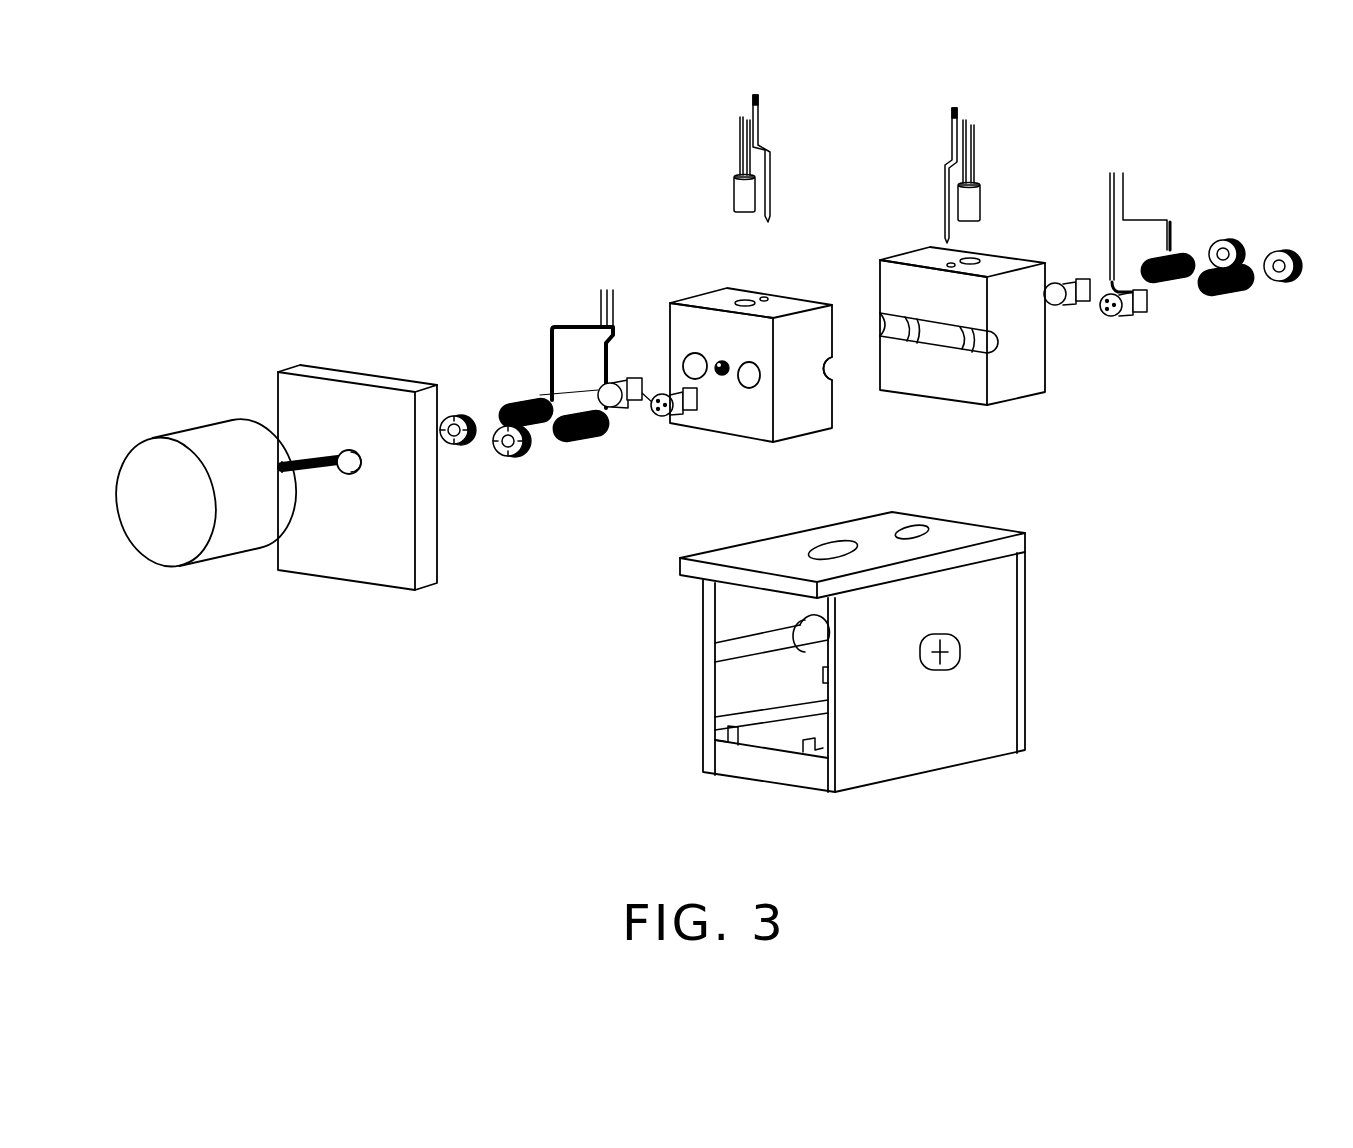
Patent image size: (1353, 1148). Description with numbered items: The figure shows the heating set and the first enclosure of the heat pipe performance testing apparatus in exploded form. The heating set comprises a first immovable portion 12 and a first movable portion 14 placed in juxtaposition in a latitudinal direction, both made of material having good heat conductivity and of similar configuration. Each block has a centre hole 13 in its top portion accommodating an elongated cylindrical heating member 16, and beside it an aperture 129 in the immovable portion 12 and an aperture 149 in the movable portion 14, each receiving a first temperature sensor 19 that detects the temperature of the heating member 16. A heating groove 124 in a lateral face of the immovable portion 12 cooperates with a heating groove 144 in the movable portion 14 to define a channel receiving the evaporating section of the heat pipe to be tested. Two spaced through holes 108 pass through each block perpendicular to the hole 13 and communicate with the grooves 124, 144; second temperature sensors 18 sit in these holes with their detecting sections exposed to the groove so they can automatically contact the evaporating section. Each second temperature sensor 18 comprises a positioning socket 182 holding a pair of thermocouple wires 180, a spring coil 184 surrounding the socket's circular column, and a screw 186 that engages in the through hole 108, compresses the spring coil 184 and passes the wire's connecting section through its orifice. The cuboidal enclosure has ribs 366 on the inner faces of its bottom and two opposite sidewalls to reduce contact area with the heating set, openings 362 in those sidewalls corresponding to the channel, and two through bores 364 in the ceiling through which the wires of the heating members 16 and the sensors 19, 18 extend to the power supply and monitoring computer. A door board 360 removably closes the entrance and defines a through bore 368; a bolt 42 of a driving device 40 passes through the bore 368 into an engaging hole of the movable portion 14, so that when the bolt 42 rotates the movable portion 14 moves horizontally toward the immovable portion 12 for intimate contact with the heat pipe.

The first immovable portion 12 is at (923, 260).
The hole 13 is at (747, 300).
The first movable portion 14 is at (707, 298).
The heating member 16 is at (738, 182).
The second temperature sensor 18 is at (854, 307).
The first temperature sensor 19 is at (758, 123).
The driving device 40 is at (183, 518).
The bolt 42 is at (307, 463).
The through hole 108 is at (747, 375).
The heating groove 124 is at (985, 338).
The aperture 129 is at (950, 263).
The heating groove 144 is at (827, 370).
The aperture 149 is at (765, 297).
The thermocouple wire 180 is at (568, 323).
The positioning socket 182 is at (620, 314).
The spring coil 184 is at (515, 400).
The screw 186 is at (460, 413).
The door board 360 is at (395, 552).
The opening 362 is at (810, 630).
The through bore 364 is at (820, 550).
The rib 366 is at (735, 723).
The through bore 368 is at (348, 472).